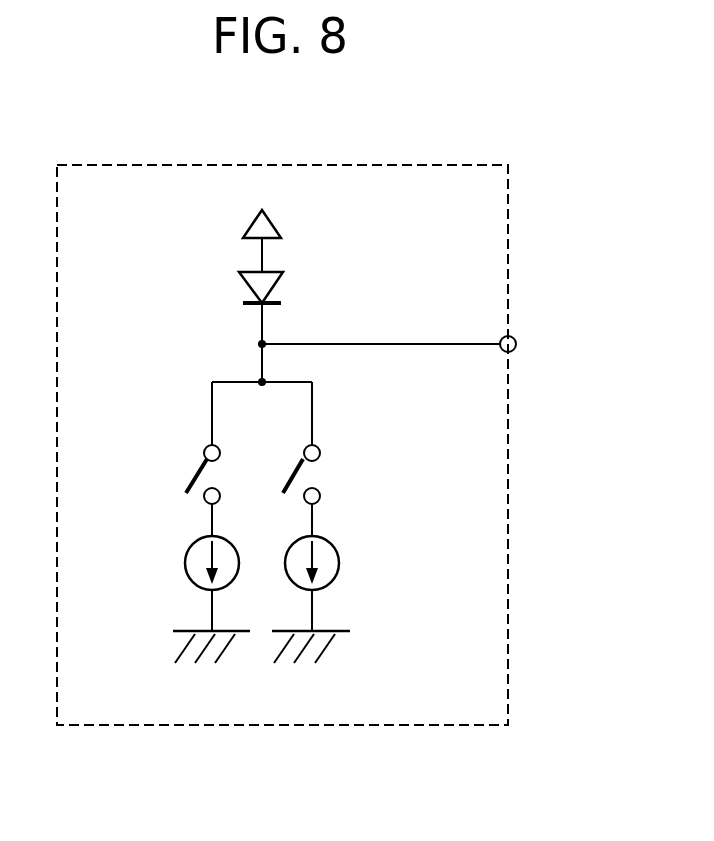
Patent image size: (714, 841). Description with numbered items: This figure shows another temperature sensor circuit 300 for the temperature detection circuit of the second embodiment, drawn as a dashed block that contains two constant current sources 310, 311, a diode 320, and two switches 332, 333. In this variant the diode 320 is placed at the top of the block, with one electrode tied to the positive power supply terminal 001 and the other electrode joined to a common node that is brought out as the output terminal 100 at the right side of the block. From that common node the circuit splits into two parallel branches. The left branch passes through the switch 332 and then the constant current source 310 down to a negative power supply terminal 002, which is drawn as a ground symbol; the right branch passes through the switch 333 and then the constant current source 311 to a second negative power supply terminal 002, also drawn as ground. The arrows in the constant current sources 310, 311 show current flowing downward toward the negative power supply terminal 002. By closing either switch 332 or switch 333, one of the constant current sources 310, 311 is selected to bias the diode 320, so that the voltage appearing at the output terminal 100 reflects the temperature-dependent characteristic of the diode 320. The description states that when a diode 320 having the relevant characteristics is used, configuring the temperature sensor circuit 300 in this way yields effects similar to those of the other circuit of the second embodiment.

The temperature sensor circuit 300 is at (442, 165).
The positive power supply terminal 001 is at (249, 224).
The diode 320 is at (283, 283).
The output terminal 100 is at (517, 338).
The switch 332 is at (196, 467).
The switch 333 is at (323, 470).
The constant current source 310 is at (185, 563).
The constant current source 311 is at (339, 563).
The negative power supply terminal 002 is at (185, 663).